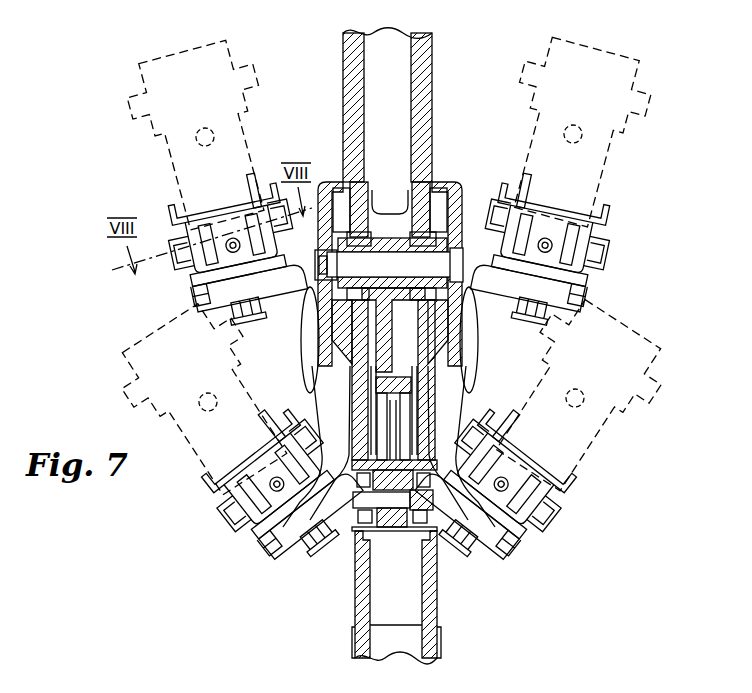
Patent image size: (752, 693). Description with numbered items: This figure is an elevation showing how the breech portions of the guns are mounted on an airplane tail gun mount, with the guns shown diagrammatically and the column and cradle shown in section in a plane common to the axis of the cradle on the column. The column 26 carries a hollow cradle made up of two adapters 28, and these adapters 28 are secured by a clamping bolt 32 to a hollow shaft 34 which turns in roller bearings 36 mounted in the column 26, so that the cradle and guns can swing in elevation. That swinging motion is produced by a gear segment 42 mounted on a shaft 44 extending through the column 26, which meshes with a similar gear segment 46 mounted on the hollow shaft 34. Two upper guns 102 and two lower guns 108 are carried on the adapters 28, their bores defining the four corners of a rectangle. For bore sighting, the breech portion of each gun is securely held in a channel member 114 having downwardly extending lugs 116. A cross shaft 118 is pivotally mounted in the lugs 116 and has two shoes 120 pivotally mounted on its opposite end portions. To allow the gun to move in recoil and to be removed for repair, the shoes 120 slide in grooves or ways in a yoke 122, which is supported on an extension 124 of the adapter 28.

The column 26 is at (387, 132).
The adapters 28 is at (336, 183).
The clamping bolt 32 is at (464, 270).
The hollow shaft 34 is at (322, 284).
The roller bearings 36 is at (378, 240).
The gear segment 42 is at (402, 412).
The shaft 44 is at (402, 532).
The gear segment 46 is at (358, 338).
The upper guns 102 is at (388, 134).
The lower guns 108 is at (392, 399).
The channel member 114 is at (183, 209).
The lugs 116 is at (262, 196).
The cross shaft 118 is at (196, 265).
The shoes 120 is at (180, 244).
The yoke 122 is at (198, 280).
The extension 124 is at (500, 568).